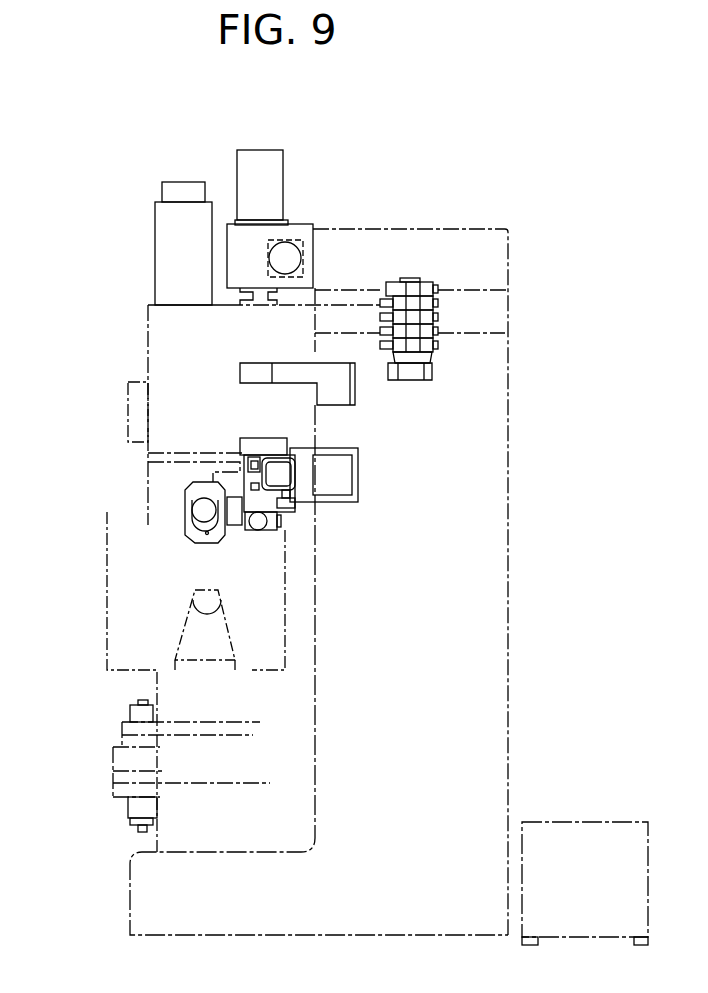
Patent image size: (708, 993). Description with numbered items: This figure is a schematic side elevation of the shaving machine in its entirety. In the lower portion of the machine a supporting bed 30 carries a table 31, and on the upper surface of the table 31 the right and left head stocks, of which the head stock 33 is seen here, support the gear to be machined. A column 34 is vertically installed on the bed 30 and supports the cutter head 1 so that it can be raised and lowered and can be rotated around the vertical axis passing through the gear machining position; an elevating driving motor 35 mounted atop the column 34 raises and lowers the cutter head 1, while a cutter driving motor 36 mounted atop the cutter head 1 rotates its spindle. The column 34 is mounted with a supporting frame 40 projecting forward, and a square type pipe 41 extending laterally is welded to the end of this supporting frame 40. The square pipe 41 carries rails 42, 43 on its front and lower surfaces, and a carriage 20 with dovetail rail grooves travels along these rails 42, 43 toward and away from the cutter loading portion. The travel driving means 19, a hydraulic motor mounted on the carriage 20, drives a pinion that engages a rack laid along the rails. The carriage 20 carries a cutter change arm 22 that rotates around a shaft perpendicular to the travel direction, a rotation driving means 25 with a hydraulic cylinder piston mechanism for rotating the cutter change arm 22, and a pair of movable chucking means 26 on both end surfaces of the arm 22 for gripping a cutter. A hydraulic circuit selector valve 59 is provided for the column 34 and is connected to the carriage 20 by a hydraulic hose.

The cutter head 1 is at (165, 350).
The travel driving means 19 is at (271, 396).
The carriage 20 is at (253, 500).
The cutter change arm 22 is at (190, 490).
The rotation driving means 25 is at (258, 531).
The movable chucking means 26 is at (185, 515).
The supporting bed 30 is at (145, 902).
The table 31 is at (175, 693).
The head stock 33 is at (200, 605).
The column 34 is at (475, 461).
The elevating driving motor 35 is at (262, 152).
The cutter driving motor 36 is at (170, 275).
The supporting frame 40 is at (320, 475).
The square type pipe 41 is at (295, 470).
The rail 42 is at (254, 460).
The rail 43 is at (288, 510).
The hydraulic circuit selector valve 59 is at (448, 316).